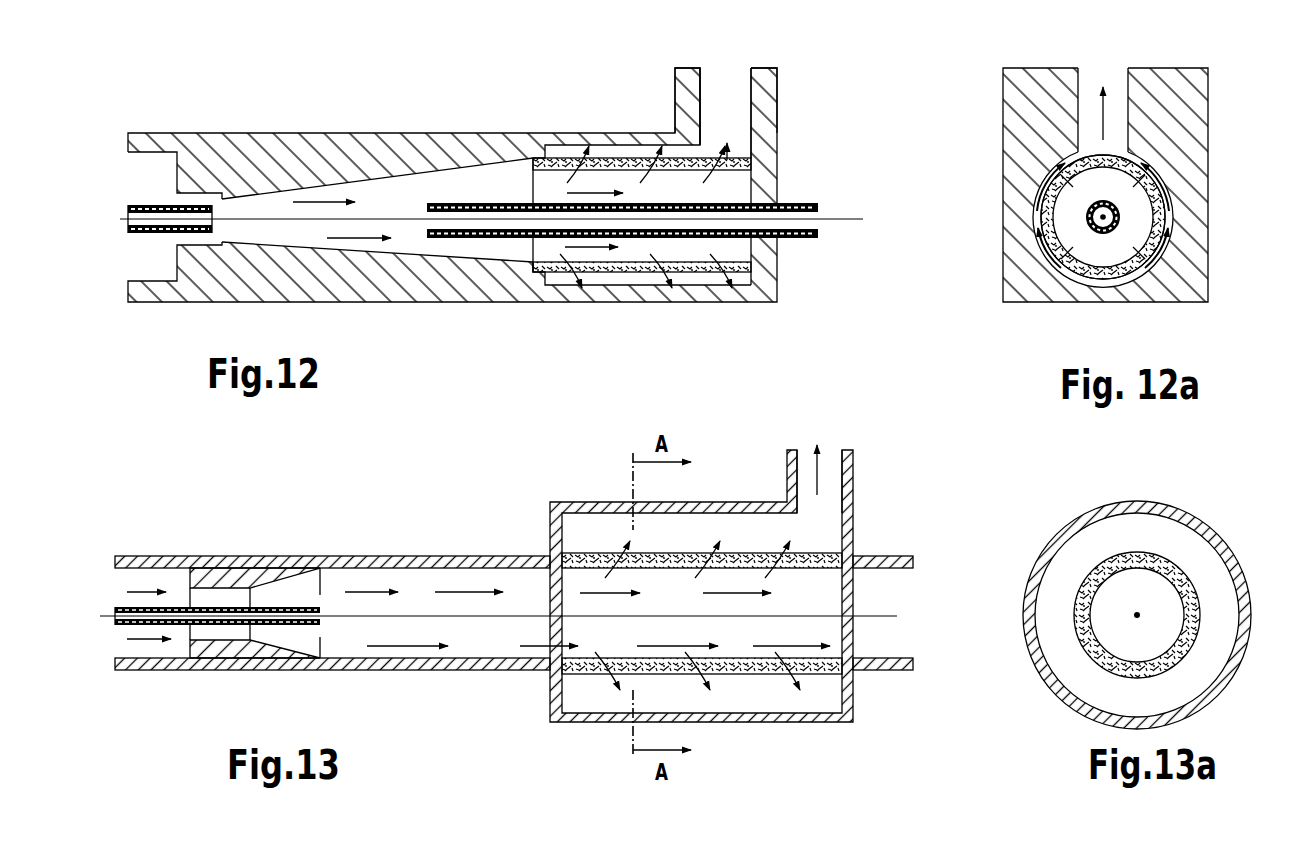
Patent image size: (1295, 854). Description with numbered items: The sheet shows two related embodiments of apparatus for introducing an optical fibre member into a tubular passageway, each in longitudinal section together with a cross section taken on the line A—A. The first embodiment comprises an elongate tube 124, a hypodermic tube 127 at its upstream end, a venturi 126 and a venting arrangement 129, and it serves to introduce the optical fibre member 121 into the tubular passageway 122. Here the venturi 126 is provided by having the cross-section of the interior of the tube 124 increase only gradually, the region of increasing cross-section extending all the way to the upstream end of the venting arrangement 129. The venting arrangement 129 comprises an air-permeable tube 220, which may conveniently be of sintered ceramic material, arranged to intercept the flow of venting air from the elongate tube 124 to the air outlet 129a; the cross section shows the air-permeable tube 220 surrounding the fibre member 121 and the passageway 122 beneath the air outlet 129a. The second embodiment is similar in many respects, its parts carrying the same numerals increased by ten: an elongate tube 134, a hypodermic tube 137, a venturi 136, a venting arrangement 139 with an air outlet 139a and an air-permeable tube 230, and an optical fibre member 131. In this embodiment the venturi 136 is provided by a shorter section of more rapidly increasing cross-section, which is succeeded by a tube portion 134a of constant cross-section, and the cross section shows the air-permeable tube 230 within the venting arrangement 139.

In FIG. 12, the optical fibre member 121 is at (838, 219).
In FIG. 12a, the optical fibre member 121 is at (1104, 222).
In FIG. 12, the tubular passageway 122 is at (783, 238).
In FIG. 12a, the tubular passageway 122 is at (1114, 204).
In FIG. 12, the elongate tube 124 is at (387, 273).
In FIG. 12, the venturi 126 is at (254, 200).
In FIG. 12, the hypodermic tube 127 is at (153, 235).
In FIG. 12, the venting arrangement 129 is at (757, 65).
In FIG. 12, the air outlet 129a is at (721, 86).
In FIG. 12a, the air outlet 129a is at (1115, 82).
In FIG. 12, the air-permeable tube 220 is at (622, 158).
In FIG. 12a, the air-permeable tube 220 is at (1156, 250).
In FIG. 13, the optical fibre member 131 is at (870, 616).
In FIG. 13, the elongate tube 134 is at (425, 553).
In FIG. 13, the tube portion of constant cross-section 134a is at (403, 672).
In FIG. 13, the venturi 136 is at (275, 574).
In FIG. 13, the hypodermic tube 137 is at (145, 626).
In FIG. 13, the venting arrangement 139 is at (741, 495).
In FIG. 13, the air outlet 139a is at (832, 468).
In FIG. 13, the air-permeable tube 230 is at (754, 676).
In FIG. 13a, the air-permeable tube 230 is at (1089, 654).